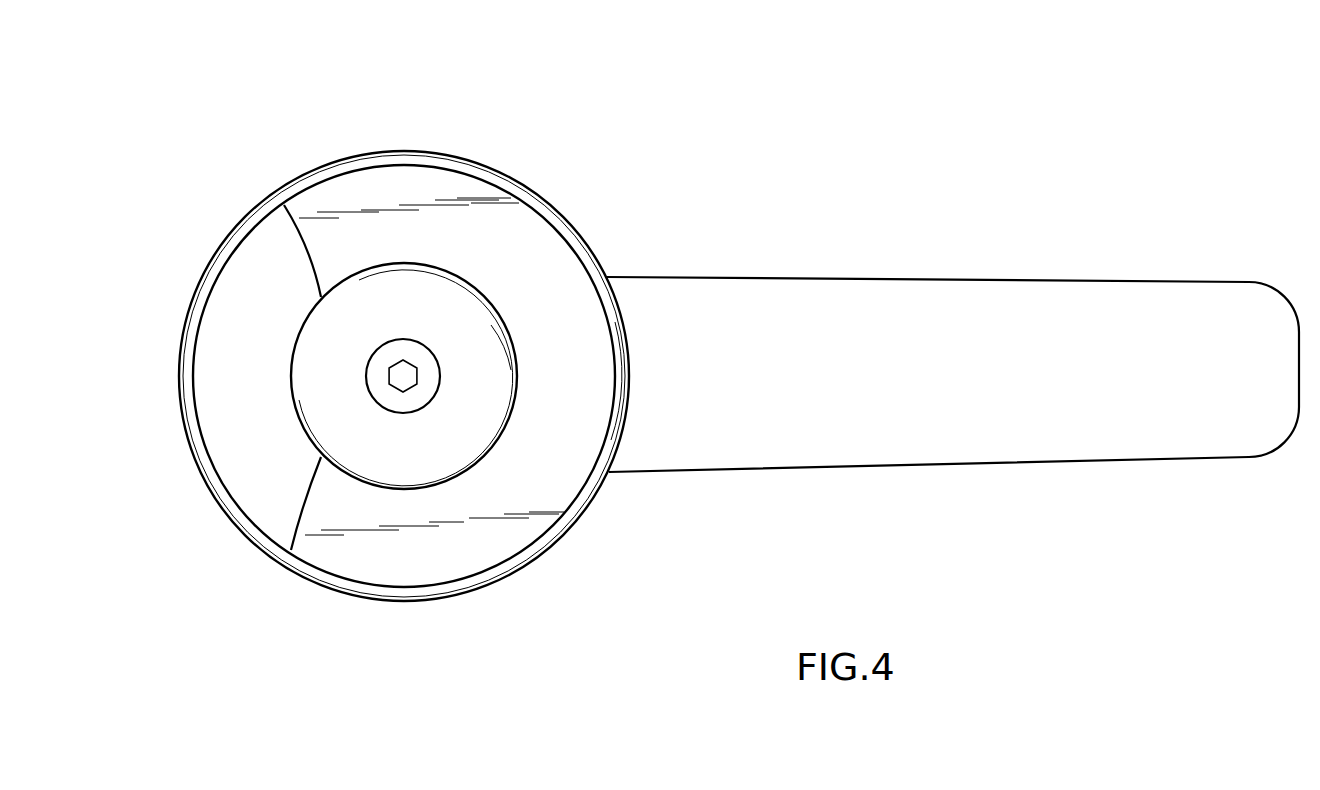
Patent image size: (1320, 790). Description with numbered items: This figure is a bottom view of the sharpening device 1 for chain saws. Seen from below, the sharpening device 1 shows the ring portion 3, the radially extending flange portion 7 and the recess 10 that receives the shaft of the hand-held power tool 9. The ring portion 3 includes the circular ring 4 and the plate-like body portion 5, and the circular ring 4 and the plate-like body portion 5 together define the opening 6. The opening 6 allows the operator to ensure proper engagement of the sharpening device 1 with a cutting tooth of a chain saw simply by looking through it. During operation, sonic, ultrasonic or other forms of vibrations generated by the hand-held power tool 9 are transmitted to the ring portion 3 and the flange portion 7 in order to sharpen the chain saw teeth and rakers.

The sharpening device 1 is at (265, 122).
The ring portion 3 is at (240, 197).
The circular ring 4 is at (197, 283).
The plate-like body portion 5 is at (404, 196).
The opening 6 is at (248, 366).
The flange portion 7 is at (357, 488).
The hand-held power tool 9 is at (1196, 275).
The recess 10 is at (415, 392).